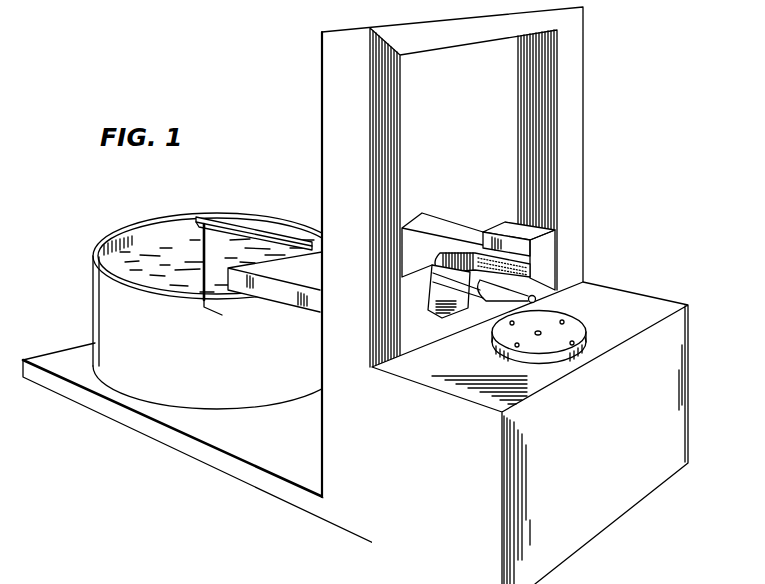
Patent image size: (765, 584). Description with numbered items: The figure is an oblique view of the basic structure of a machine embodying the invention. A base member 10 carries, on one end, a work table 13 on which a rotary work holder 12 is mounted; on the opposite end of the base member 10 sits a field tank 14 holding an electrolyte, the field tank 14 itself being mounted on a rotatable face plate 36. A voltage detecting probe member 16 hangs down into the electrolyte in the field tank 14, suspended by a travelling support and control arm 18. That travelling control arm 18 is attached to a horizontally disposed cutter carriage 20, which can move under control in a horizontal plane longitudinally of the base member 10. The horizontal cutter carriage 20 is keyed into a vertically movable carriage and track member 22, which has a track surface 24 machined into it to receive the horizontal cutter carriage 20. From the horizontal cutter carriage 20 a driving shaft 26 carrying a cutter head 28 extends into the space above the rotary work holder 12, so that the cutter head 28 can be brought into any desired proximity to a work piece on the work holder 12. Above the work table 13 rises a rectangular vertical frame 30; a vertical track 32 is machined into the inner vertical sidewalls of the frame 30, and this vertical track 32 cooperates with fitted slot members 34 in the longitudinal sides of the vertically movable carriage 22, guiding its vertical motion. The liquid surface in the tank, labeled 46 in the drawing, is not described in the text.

The base member 10 is at (375, 527).
The rotary work holder 12 is at (574, 328).
The work table 13 is at (632, 298).
The field tank 14 is at (98, 304).
The voltage detecting probe member 16 is at (208, 311).
The travelling support and control arm 18 is at (219, 227).
The horizontal cutter carriage 20 is at (417, 252).
The vertically movable carriage and track member 22 is at (426, 305).
The track surface 24 is at (529, 279).
The driving shaft 26 is at (468, 284).
The cutter head 28 is at (538, 300).
The rectangular vertical frame 30 is at (575, 102).
The vertical track 32 is at (530, 118).
The fitted slot members 34 is at (508, 228).
The rotatable face plate 36 is at (217, 400).
The liquid 46 is at (167, 253).